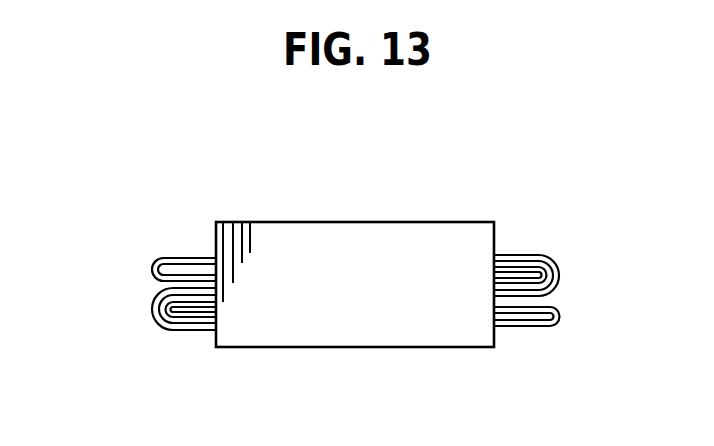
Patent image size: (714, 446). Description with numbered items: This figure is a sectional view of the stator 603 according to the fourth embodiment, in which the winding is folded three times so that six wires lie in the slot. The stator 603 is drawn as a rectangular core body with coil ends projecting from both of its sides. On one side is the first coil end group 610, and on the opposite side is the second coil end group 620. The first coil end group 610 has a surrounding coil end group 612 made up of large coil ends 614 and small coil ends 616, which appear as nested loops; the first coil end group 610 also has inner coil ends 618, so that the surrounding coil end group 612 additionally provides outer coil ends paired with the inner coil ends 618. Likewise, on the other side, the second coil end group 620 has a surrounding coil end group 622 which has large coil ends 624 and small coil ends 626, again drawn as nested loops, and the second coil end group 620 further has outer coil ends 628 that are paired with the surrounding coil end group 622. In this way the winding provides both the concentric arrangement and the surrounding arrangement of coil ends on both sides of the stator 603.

The stator 603 is at (356, 216).
The first coil end group 610 is at (580, 237).
The surrounding coil end group 612 is at (580, 252).
The large coil ends 614 is at (530, 256).
The small coil ends 616 is at (560, 263).
The inner coil ends 618 is at (556, 311).
The second coil end group 620 is at (93, 348).
The surrounding coil end group 622 is at (119, 317).
The large coil ends 624 is at (153, 305).
The small coil ends 626 is at (153, 318).
The outer coil ends 628 is at (152, 268).